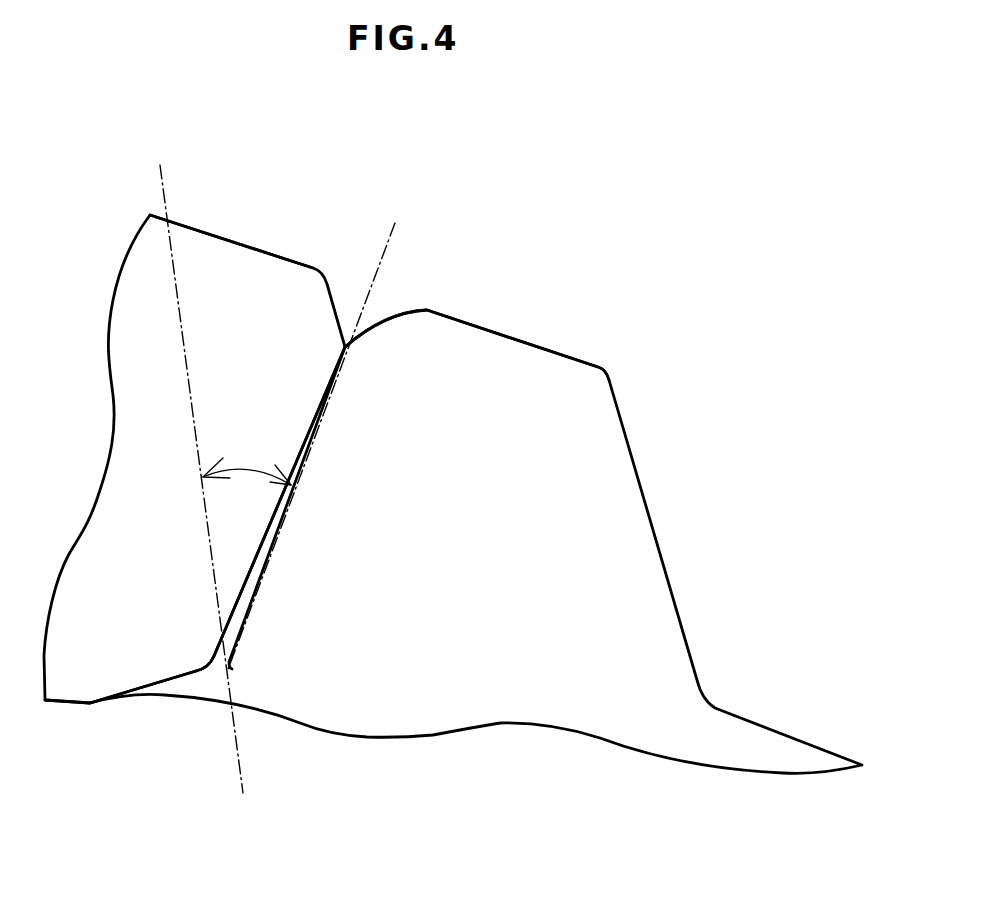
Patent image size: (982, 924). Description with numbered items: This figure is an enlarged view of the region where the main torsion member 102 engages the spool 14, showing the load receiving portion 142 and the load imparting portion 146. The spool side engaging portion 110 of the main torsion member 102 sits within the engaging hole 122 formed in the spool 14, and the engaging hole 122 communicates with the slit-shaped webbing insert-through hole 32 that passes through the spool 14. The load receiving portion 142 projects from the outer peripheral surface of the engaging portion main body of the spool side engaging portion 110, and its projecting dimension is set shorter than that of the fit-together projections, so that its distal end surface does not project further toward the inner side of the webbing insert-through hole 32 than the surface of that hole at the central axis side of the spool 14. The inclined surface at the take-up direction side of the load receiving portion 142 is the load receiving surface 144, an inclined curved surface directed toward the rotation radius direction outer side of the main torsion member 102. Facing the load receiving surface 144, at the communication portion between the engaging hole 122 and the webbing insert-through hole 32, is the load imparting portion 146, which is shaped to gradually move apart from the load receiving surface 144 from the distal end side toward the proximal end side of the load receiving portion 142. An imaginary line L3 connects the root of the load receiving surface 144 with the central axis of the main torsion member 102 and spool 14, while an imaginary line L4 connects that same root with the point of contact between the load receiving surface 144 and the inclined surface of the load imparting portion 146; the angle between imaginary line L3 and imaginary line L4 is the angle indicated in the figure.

The spool 14 is at (275, 267).
The webbing insert-through hole 32 is at (218, 237).
The load receiving portion 142 is at (483, 340).
The load receiving surface 144 is at (243, 577).
The load imparting portion 146 is at (237, 605).
The engaging hole 122 is at (172, 681).
The spool side engaging portion 110 is at (476, 577).
The main torsion member 102 is at (402, 711).
The imaginary line L3 is at (210, 527).
The imaginary line L4 is at (283, 508).